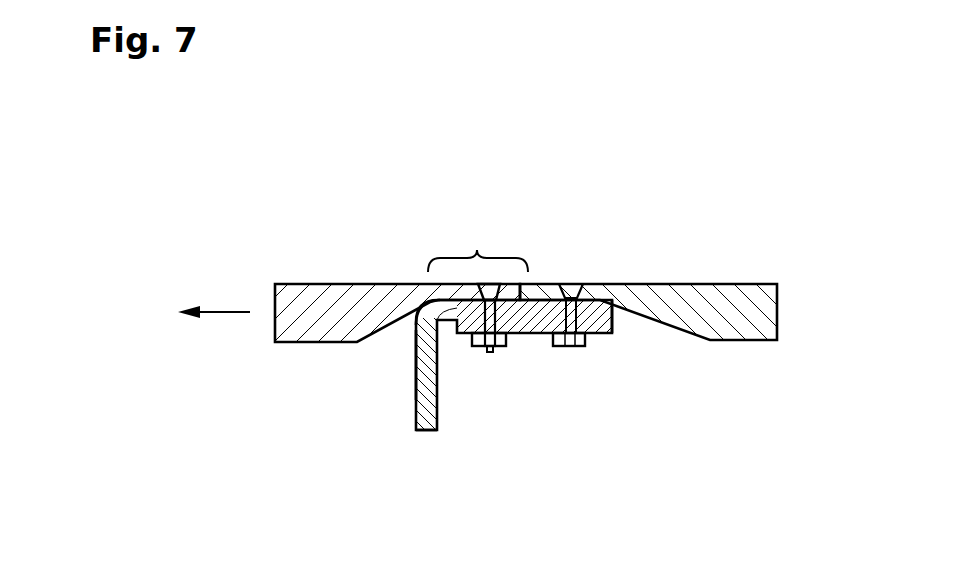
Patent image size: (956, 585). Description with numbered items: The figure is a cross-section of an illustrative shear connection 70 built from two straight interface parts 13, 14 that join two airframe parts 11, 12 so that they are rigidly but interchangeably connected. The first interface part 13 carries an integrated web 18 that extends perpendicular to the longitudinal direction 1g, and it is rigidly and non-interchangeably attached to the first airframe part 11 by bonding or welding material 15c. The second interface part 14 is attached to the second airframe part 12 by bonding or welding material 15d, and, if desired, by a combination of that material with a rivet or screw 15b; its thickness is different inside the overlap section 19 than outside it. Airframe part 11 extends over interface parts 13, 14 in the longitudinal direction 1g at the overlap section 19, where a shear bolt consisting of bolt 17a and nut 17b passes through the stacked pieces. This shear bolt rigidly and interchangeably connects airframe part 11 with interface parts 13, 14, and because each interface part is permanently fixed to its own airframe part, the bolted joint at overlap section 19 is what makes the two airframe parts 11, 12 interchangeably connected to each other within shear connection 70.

The shear connection 70 is at (558, 210).
The airframe part 11 is at (321, 296).
The airframe part 12 is at (703, 297).
The interface part 13 is at (417, 347).
The interface part 14 is at (586, 338).
The rivet or screw 15b is at (588, 348).
The bonding or welding material 15c is at (418, 292).
The bonding or welding material 15d is at (606, 327).
The bolt 17a is at (489, 354).
The nut 17b is at (505, 340).
The integrated web 18 is at (427, 406).
The overlap section 19 is at (478, 246).
The longitudinal direction 1g is at (222, 316).